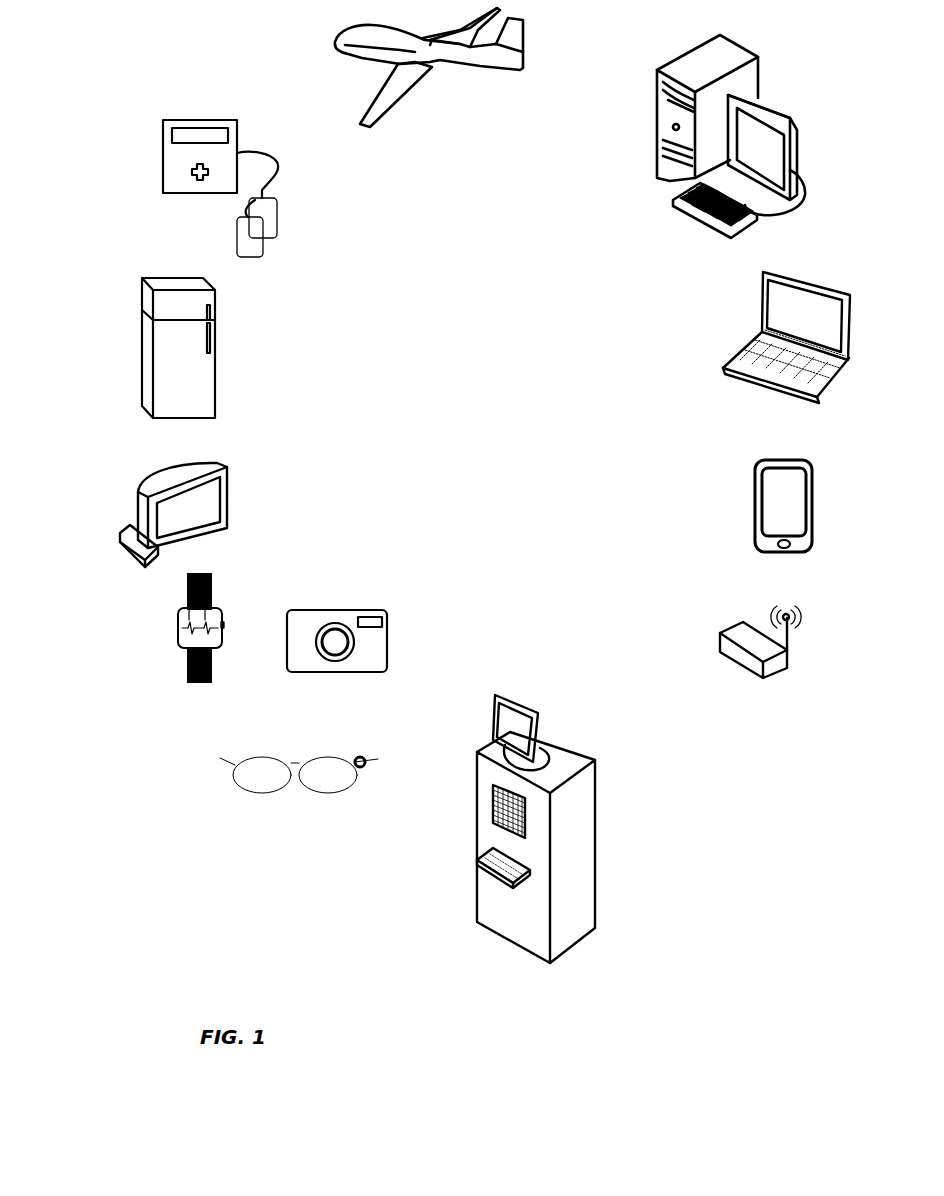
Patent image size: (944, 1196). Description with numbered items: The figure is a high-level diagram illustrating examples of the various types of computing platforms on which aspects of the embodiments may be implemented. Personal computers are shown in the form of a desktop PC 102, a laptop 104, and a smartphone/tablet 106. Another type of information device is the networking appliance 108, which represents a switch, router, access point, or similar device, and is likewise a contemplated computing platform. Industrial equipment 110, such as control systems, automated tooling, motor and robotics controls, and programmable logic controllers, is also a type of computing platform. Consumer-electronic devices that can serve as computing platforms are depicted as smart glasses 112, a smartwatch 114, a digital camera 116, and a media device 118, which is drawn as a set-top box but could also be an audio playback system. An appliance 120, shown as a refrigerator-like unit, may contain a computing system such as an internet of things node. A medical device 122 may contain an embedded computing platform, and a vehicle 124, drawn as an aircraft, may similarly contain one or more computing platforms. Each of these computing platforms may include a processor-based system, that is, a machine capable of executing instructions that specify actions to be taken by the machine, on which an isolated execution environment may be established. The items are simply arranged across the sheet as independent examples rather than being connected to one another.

The desktop PC 102 is at (657, 140).
The laptop 104 is at (730, 370).
The smartphone/tablet 106 is at (757, 485).
The networking appliance 108 is at (730, 658).
The industrial equipment 110 is at (477, 896).
The smart glasses 112 is at (248, 790).
The smartwatch 114 is at (178, 638).
The digital camera 116 is at (352, 610).
The media device 118 is at (125, 535).
The appliance 120 is at (143, 376).
The medical device 122 is at (163, 172).
The vehicle 124 is at (345, 60).